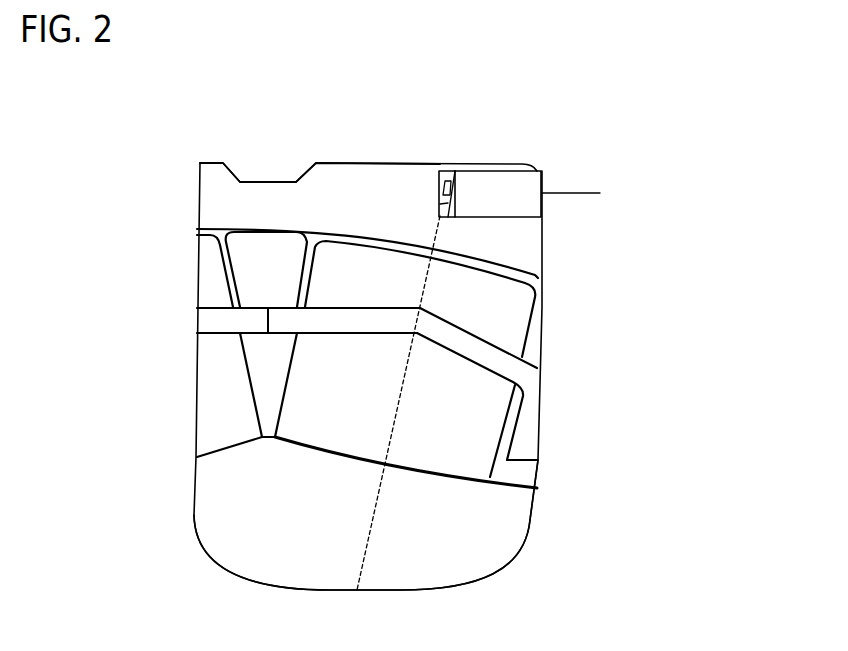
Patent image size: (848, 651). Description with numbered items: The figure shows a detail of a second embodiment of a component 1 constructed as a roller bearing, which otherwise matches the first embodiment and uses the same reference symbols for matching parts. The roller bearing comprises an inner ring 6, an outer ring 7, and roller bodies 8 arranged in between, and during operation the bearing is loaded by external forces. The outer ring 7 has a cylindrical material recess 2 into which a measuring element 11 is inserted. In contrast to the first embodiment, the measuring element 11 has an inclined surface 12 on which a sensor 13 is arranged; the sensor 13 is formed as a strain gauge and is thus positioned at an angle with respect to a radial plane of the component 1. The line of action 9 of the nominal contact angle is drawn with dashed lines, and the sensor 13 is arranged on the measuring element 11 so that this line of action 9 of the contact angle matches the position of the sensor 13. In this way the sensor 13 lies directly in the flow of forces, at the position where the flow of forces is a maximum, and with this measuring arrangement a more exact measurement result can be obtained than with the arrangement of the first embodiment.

The component 1 is at (680, 203).
The material recess 2 is at (508, 170).
The inner ring 6 is at (502, 548).
The outer ring 7 is at (323, 182).
The roller bodies 8 is at (512, 330).
The line of action 9 is at (402, 385).
The measuring element 11 is at (505, 198).
The inclined surface 12 is at (440, 212).
The sensor 13 is at (439, 196).